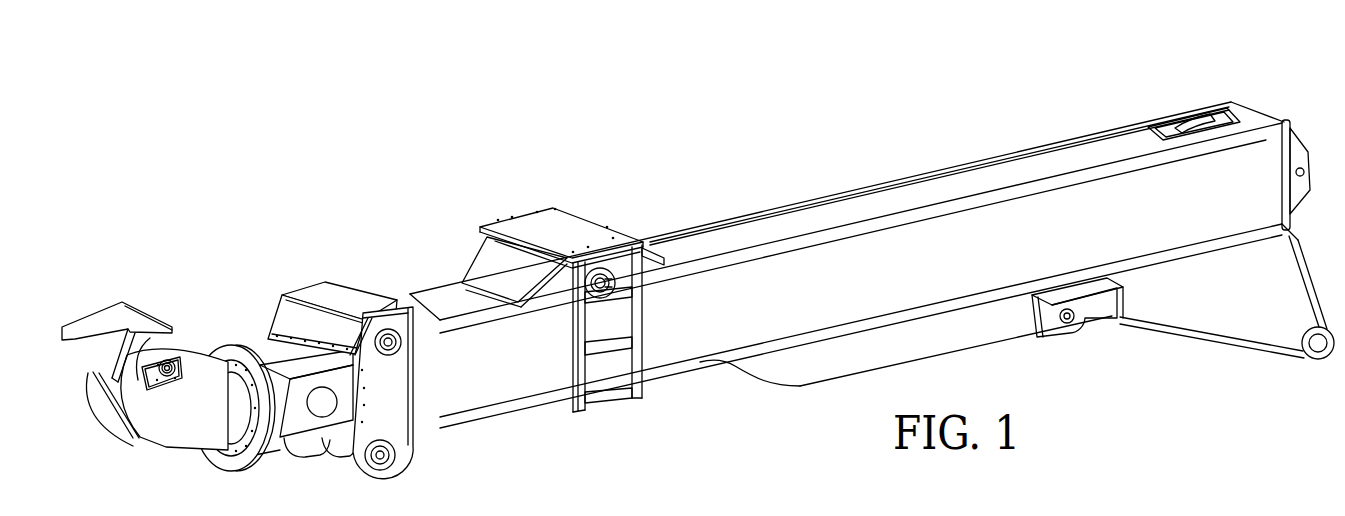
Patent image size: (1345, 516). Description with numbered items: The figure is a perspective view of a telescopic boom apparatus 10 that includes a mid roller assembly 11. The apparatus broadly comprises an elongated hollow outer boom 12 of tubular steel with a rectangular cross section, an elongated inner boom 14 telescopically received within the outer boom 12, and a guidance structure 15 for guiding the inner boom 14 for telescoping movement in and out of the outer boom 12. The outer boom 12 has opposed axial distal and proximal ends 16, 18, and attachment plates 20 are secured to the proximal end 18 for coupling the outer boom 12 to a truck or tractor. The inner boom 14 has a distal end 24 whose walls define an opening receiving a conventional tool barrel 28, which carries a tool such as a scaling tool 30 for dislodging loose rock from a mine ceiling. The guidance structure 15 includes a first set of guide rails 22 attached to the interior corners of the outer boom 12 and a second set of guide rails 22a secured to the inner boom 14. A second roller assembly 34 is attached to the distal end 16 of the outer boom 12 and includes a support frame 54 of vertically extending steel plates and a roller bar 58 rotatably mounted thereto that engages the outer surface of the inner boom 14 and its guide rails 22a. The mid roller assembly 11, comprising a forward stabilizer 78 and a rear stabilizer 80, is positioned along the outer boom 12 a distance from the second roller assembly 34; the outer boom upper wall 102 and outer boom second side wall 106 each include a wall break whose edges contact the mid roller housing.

The telescopic boom apparatus 10 is at (757, 92).
The mid roller assembly 11 is at (585, 183).
The outer boom 12 is at (984, 125).
The inner boom 14 is at (262, 352).
The guidance structure 15 is at (300, 152).
The distal end 16 is at (422, 278).
The proximal end 18 is at (1260, 85).
The attachment plates 20 is at (1223, 318).
The first set of guide rails 22 is at (735, 255).
The second set of guide rails 22a is at (276, 445).
The distal end 24 is at (211, 322).
The tool barrel 28 is at (172, 420).
The scaling tool 30 is at (135, 312).
The second roller assembly 34 is at (327, 262).
The support frame 54 is at (392, 420).
The roller bar 58 is at (337, 447).
The forward stabilizer 78 is at (470, 257).
The rear stabilizer 80 is at (664, 245).
The outer boom upper wall 102 is at (935, 185).
The outer boom second side wall 106 is at (962, 258).